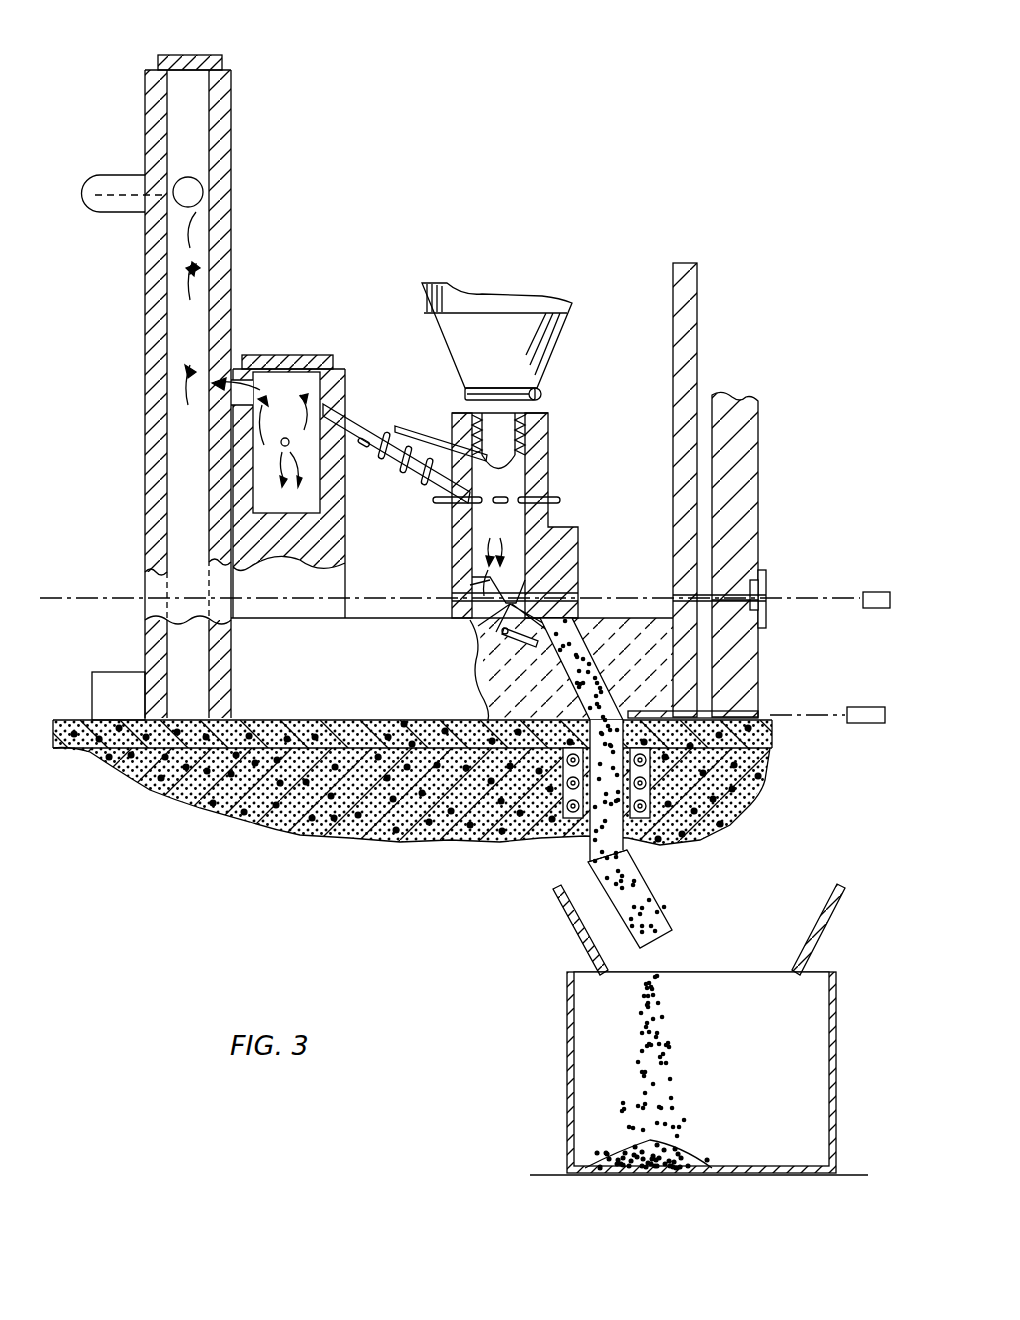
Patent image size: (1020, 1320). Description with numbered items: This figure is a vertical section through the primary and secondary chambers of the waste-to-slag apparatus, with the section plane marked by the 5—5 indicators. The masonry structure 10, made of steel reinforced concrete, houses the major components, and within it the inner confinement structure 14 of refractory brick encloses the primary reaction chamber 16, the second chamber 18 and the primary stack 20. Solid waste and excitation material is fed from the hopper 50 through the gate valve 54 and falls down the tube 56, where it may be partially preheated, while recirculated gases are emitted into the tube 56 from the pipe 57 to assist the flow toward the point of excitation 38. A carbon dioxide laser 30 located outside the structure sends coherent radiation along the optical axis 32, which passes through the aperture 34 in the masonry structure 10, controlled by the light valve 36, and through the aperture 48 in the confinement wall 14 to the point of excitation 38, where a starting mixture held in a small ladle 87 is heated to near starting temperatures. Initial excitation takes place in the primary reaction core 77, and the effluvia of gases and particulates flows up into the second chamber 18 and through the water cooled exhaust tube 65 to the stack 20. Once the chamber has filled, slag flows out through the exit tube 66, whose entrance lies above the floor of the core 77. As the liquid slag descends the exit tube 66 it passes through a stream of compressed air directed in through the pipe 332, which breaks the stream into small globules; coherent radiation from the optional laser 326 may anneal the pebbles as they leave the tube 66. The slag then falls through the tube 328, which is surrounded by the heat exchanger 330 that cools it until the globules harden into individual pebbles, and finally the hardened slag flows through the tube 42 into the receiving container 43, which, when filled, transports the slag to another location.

The section line 5- 5 is at (287, 232).
The masonry structure 10 is at (758, 418).
The inner confinement structure 14 is at (697, 280).
The primary reaction chamber 16 is at (548, 528).
The second chamber 18 is at (300, 368).
The primary stack 20 is at (210, 288).
The carbon dioxide laser 30 is at (878, 608).
The optical axis 32 is at (126, 595).
The aperture 34 is at (732, 603).
The light valve 36 is at (766, 578).
The point of excitation 38 is at (520, 565).
The slag receiving opening 42 is at (655, 914).
The receiving container 43 is at (838, 1090).
The aperture 48 is at (673, 588).
The hopper 50 is at (562, 328).
The gate valve 54 is at (463, 390).
The tube 56 is at (520, 458).
The pipe 57 is at (432, 425).
The water cooled exhaust tube 65 is at (405, 472).
The exit tube 66 is at (592, 650).
The primary reaction core 77 is at (498, 612).
The ladle 87 is at (500, 636).
The laser 326 is at (868, 724).
The tube 328 is at (640, 845).
The heat exchanger 330 is at (575, 822).
The pipe 332 is at (478, 655).